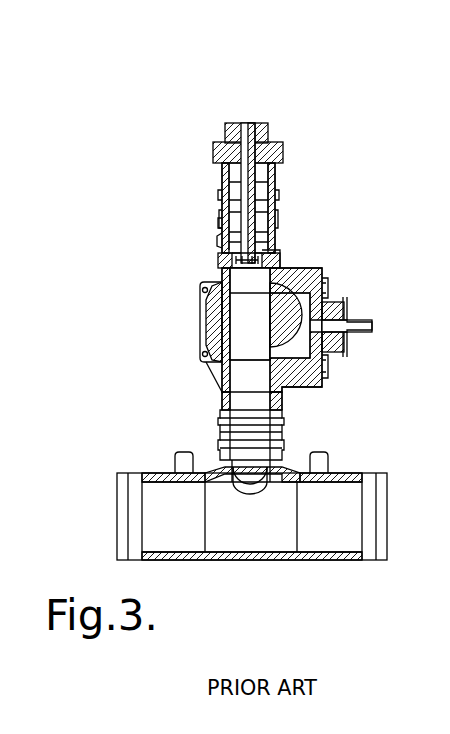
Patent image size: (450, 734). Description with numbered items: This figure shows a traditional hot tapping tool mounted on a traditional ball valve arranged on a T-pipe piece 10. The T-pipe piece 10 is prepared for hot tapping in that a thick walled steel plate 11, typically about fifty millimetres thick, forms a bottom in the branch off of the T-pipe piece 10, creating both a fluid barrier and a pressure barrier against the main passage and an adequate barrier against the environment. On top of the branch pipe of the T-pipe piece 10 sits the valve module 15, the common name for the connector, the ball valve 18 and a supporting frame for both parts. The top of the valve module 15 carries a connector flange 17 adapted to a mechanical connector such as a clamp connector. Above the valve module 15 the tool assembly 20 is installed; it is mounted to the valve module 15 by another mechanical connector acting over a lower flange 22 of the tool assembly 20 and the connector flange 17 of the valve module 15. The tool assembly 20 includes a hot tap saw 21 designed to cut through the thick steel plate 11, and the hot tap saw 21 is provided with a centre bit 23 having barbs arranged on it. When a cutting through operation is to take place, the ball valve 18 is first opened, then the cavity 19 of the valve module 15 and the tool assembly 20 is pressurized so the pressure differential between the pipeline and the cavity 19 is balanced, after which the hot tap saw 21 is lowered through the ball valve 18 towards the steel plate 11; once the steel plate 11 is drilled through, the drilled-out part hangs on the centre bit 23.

The T-pipe piece 10 is at (343, 470).
The steel plate 11 is at (263, 482).
The valve module 15 is at (320, 268).
The connector flange 17 is at (218, 238).
The ball valve 18 is at (219, 323).
The cavity 19 is at (243, 372).
The tool assembly 20 is at (281, 141).
The hot tap saw 21 is at (222, 277).
The lower flange 22 is at (218, 225).
The centre bit 23 is at (282, 258).